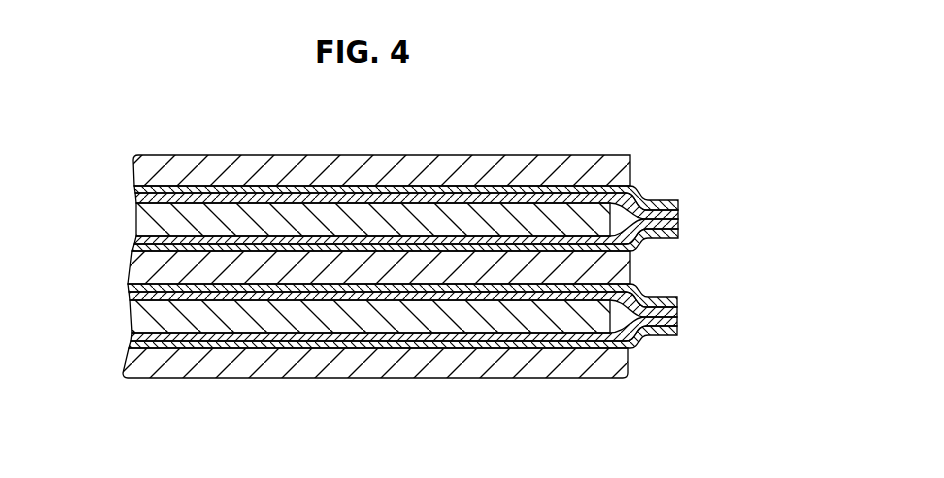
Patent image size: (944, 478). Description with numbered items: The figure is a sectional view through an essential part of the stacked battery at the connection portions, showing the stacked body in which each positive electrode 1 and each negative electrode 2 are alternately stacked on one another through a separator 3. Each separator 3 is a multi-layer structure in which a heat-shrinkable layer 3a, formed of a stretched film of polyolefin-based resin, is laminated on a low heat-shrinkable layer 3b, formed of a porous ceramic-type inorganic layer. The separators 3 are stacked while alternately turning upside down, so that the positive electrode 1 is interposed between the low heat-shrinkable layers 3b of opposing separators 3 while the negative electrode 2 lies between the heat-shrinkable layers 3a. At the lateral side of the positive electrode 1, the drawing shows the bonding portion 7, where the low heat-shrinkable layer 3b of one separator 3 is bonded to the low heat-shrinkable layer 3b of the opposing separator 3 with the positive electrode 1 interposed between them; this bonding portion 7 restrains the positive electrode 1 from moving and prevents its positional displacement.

The positive electrode 1 is at (136, 215).
The negative electrode 2 is at (132, 172).
The separator 3 is at (806, 160).
The heat-shrinkable layer 3a is at (672, 201).
The low heat-shrinkable layer 3b is at (677, 215).
The bonding portion 7 is at (658, 180).